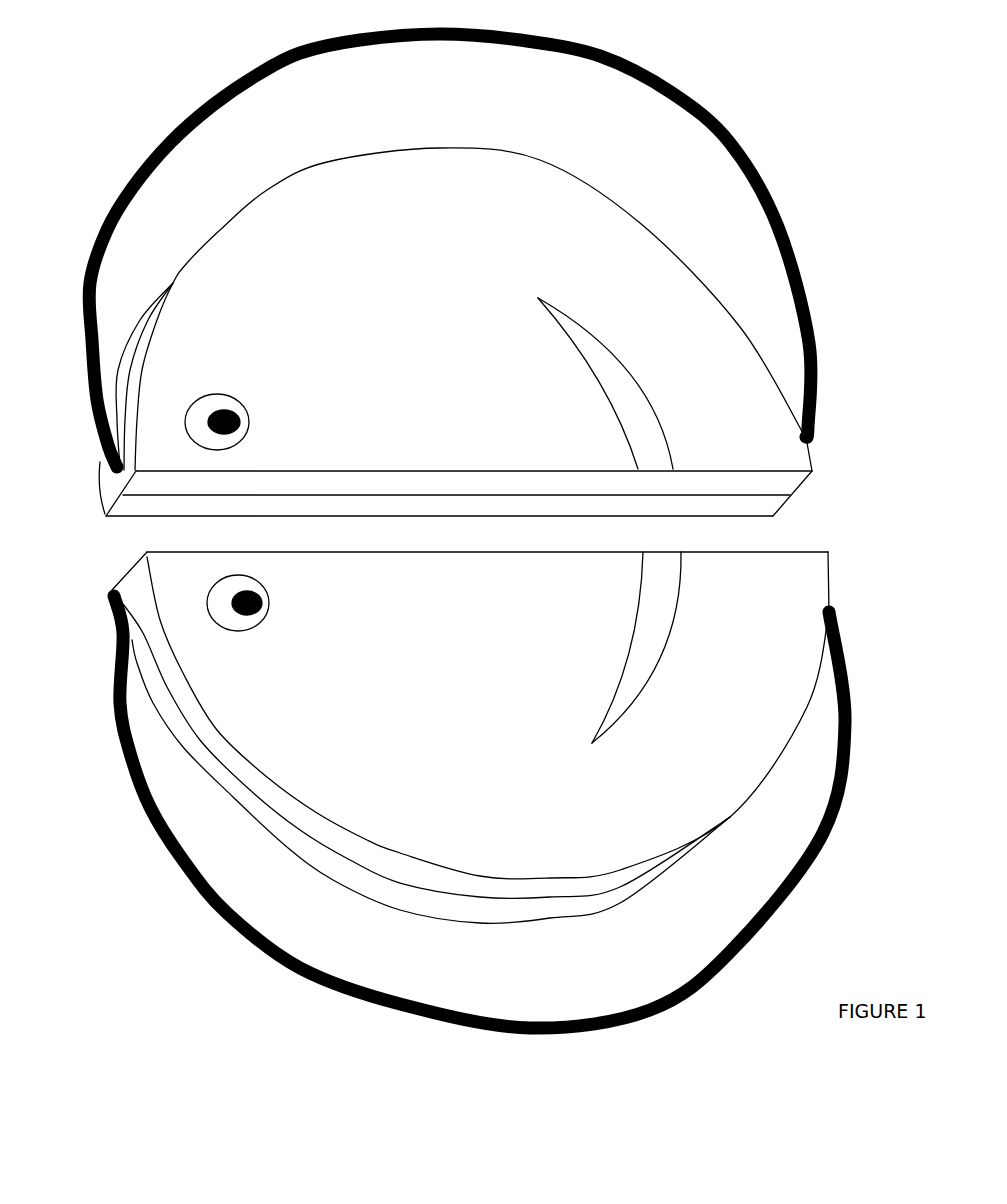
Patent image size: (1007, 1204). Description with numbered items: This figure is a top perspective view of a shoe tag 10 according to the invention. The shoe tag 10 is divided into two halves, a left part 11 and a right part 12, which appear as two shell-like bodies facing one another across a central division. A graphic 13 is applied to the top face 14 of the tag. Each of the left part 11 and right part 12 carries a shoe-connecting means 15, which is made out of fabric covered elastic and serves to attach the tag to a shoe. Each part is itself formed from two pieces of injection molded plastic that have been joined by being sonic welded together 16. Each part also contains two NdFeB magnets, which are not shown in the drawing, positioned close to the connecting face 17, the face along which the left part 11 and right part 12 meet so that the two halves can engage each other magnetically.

The shoe tag 10 is at (100, 187).
The left part 11 is at (293, 853).
The right part 12 is at (326, 162).
The graphic 13 is at (213, 396).
The top face 14 is at (527, 207).
The shoe-connecting means 15 is at (733, 153).
The sonic weld 16 is at (153, 494).
The connecting face 17 is at (790, 478).